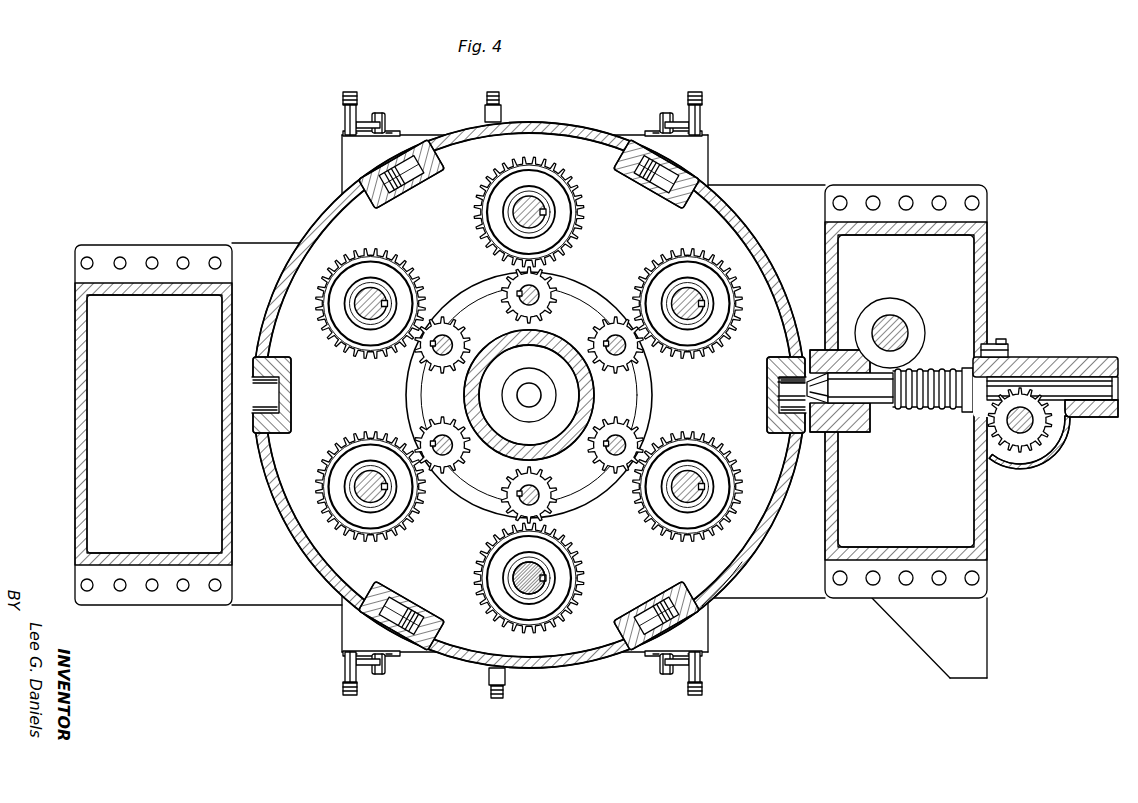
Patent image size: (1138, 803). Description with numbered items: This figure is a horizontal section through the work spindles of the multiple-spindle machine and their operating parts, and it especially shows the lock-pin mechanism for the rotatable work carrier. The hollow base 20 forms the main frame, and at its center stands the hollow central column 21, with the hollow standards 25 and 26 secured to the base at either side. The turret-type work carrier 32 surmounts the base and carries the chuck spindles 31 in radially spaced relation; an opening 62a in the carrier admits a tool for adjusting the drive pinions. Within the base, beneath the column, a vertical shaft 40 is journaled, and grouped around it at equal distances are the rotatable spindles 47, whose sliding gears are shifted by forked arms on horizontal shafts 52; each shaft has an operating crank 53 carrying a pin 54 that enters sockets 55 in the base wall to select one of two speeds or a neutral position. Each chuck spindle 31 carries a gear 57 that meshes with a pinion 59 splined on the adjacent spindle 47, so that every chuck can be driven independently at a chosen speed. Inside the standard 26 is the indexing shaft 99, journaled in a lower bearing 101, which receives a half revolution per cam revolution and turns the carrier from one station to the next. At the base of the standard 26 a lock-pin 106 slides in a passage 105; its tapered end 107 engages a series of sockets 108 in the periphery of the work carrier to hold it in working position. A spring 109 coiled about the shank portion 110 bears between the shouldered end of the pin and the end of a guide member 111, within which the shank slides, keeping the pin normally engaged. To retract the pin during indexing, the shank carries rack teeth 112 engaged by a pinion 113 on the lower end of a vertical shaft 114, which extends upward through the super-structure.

The base 20 is at (302, 598).
The central vertical cylindrical column 21 is at (556, 344).
The vertical hollow standard 25 is at (75, 403).
The vertical hollow standard 26 is at (988, 497).
The spindle 31 is at (560, 568).
The work carrier 32 is at (576, 657).
The vertical shaft 40 is at (531, 387).
The rotatable spindle 47 is at (538, 490).
The shaft 52 is at (385, 114).
The operating crank 53 is at (364, 124).
The pin 54 is at (352, 87).
The socket 55 is at (400, 132).
The gear 57 is at (572, 578).
The pinion 59 is at (507, 470).
The opening 62a is at (738, 570).
The vertical shaft 99 is at (898, 328).
The bearing 101 is at (914, 322).
The passage 105 is at (850, 433).
The lock-pin 106 is at (850, 388).
The tapered end 107 is at (818, 420).
The socket 108 is at (785, 365).
The spring 109 is at (916, 410).
The shank portion 110 is at (940, 410).
The guide member 111 is at (1044, 372).
The rack teeth 112 is at (1072, 420).
The pinion 113 is at (1034, 430).
The vertical shaft 114 is at (1048, 452).